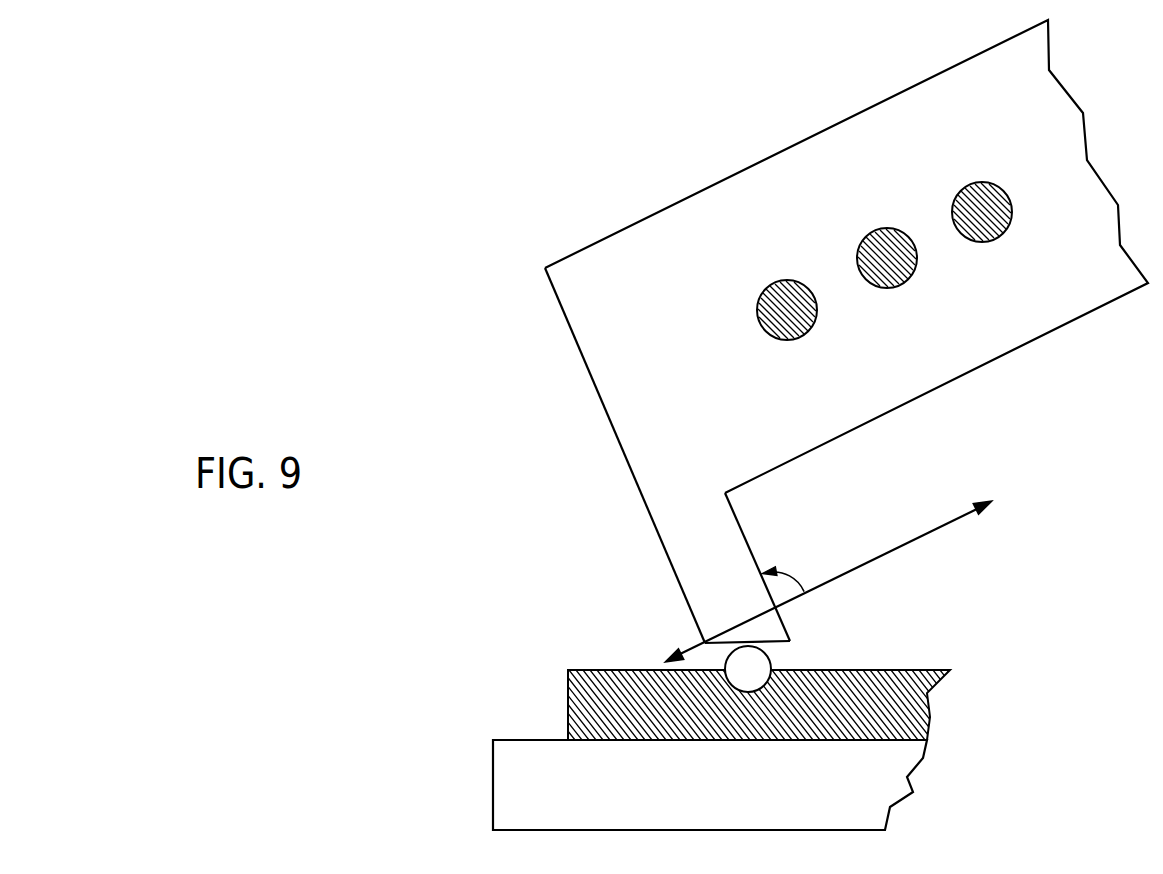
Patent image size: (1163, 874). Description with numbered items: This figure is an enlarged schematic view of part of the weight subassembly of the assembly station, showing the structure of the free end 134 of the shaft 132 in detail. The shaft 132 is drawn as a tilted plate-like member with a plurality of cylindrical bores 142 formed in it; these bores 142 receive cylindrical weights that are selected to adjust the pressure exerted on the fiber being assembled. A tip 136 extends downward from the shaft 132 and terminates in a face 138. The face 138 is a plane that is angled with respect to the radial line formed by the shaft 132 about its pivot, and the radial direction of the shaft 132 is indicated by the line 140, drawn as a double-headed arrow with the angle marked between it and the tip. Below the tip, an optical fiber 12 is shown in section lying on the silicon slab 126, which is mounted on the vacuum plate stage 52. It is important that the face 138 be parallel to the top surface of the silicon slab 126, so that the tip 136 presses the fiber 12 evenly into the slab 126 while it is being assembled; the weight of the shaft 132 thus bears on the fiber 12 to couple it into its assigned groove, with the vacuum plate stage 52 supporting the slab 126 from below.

The optical fiber 12 is at (772, 660).
The vacuum plate stage 52 is at (542, 740).
The silicon slab 126 is at (907, 670).
The shaft 132 is at (1087, 318).
The free end 134 is at (605, 350).
The tip 136 is at (750, 548).
The face 138 is at (785, 644).
The line 140 is at (934, 528).
The cylindrical bores 142 is at (958, 193).